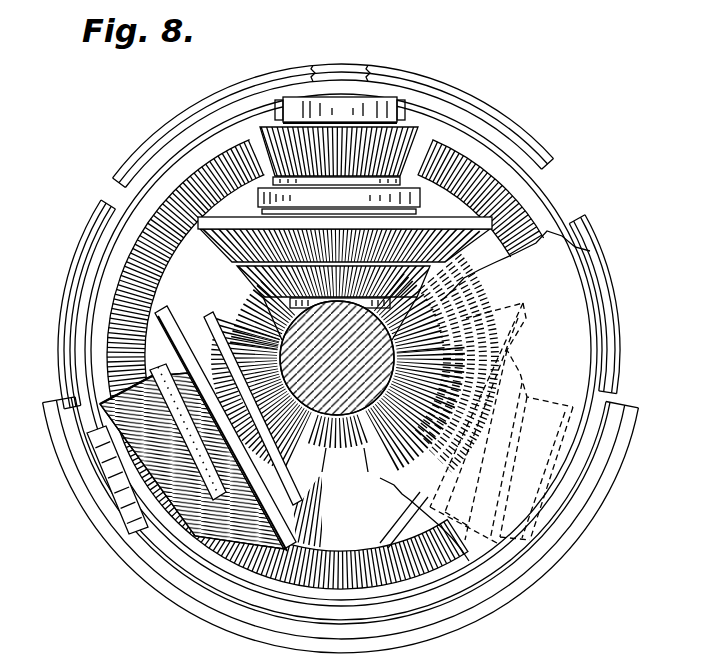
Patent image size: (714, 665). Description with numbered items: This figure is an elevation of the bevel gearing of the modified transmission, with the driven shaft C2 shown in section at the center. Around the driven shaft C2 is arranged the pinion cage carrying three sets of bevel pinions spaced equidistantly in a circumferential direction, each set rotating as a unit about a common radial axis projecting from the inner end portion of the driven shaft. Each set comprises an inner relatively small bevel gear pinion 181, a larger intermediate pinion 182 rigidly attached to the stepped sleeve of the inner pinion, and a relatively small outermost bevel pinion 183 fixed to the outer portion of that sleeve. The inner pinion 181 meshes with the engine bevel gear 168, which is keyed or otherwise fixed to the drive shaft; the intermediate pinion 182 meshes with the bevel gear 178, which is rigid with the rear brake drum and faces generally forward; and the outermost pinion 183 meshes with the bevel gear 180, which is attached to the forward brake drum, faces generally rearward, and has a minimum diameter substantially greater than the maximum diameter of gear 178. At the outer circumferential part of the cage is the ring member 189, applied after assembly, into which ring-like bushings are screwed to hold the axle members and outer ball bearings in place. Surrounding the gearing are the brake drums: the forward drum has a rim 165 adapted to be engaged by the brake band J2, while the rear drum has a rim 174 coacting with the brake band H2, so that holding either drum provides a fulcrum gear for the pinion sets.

The rim 165 is at (85, 320).
The brake band J2 is at (62, 350).
The rim 174 is at (593, 332).
The ring member 189 is at (490, 128).
The brake band H2 is at (612, 295).
The bevel gear 180 is at (473, 173).
The outermost bevel pinion 183 is at (408, 132).
The intermediate pinion 182 is at (517, 218).
The inner bevel gear pinion 181 is at (247, 277).
The bevel gear 168 is at (268, 322).
The driven shaft C2 is at (337, 403).
The bevel gear 178 is at (463, 293).